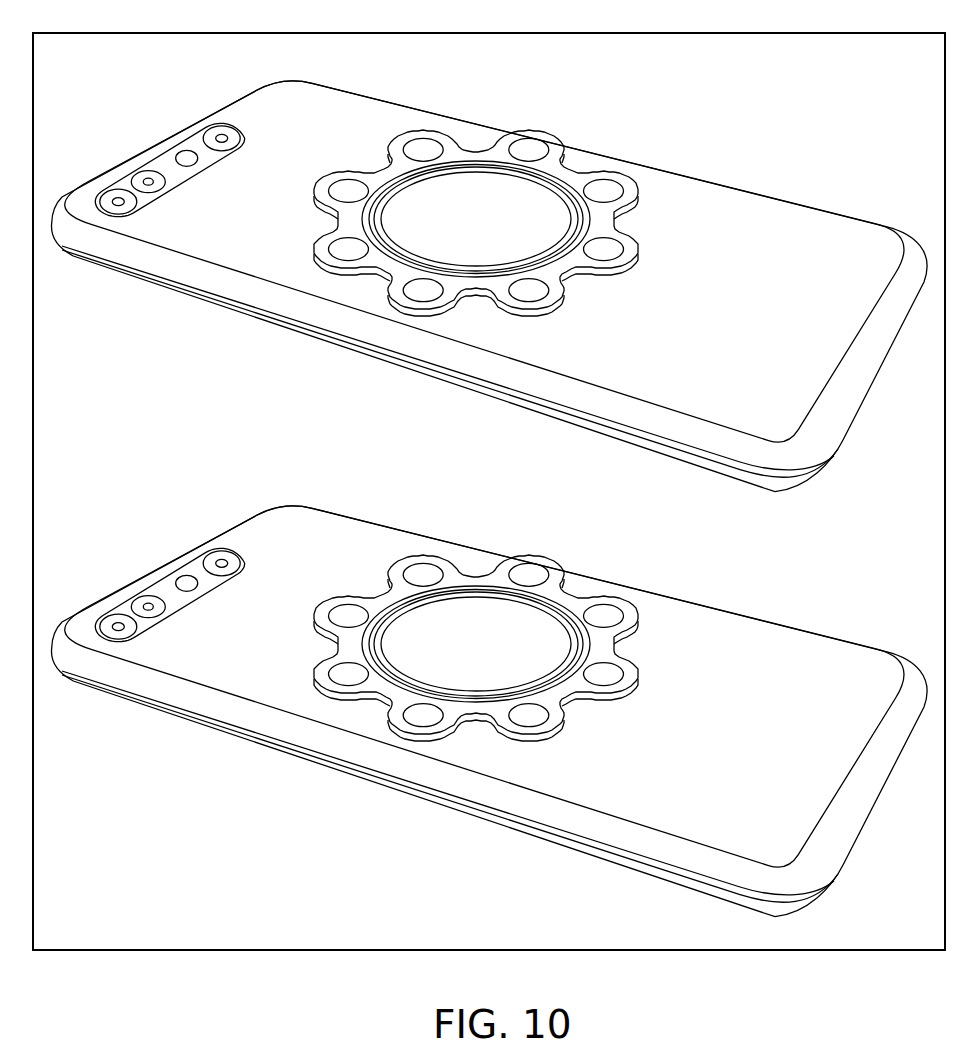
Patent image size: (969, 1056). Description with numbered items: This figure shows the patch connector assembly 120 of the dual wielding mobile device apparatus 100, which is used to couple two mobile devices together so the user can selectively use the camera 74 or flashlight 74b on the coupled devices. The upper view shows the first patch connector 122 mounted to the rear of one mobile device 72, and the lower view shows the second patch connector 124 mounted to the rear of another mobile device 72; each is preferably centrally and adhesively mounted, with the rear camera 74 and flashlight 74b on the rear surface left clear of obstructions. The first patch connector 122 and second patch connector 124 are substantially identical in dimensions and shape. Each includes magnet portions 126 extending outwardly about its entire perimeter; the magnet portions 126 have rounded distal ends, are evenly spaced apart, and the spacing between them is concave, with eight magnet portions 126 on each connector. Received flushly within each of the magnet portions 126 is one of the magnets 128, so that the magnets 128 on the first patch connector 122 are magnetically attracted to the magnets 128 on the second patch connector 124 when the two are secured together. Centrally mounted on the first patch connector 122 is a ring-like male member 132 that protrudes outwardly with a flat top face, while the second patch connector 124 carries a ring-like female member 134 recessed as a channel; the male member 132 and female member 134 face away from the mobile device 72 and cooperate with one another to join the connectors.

The dual wielding mobile device apparatus 100 is at (490, 499).
The mobile device 72 is at (193, 267).
The camera 74 is at (125, 178).
The flashlight 74b is at (168, 336).
The patch connector assembly 120 is at (514, 402).
The first patch connector 122 is at (640, 252).
The second patch connector 124 is at (642, 684).
The magnet portions 126 is at (323, 185).
The magnets 128 is at (425, 152).
The male member 132 is at (488, 160).
The female member 134 is at (488, 593).